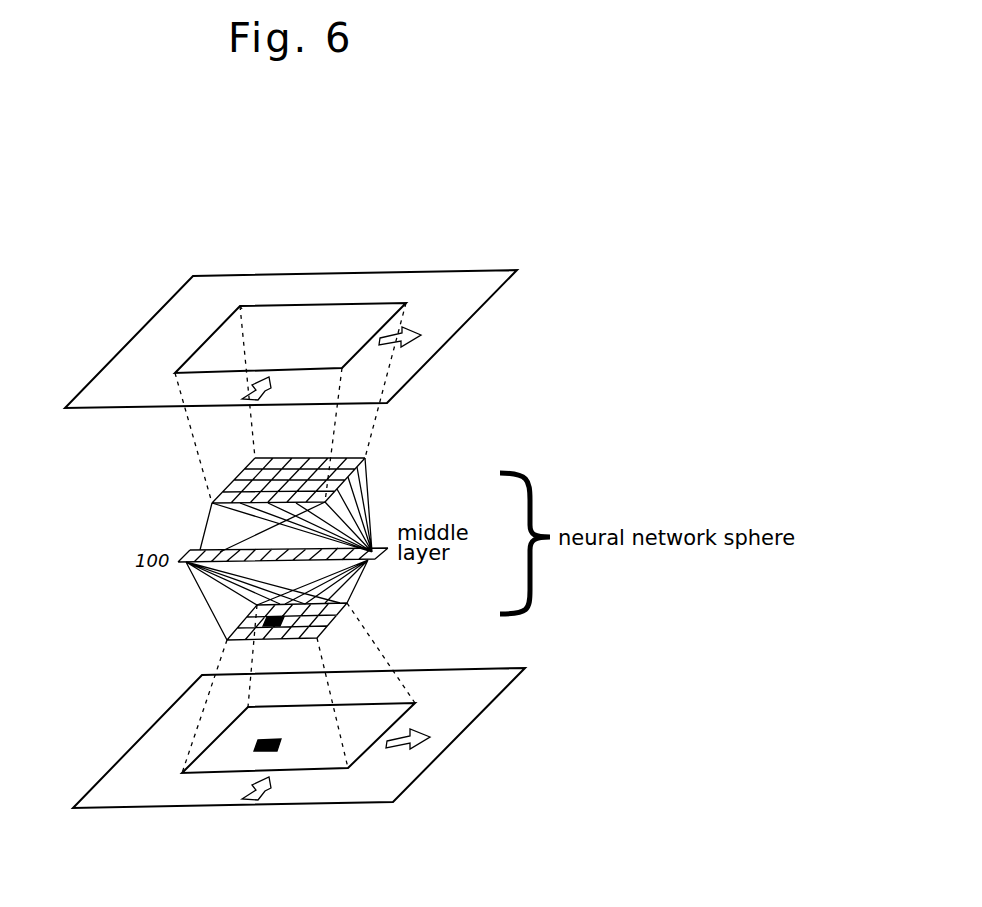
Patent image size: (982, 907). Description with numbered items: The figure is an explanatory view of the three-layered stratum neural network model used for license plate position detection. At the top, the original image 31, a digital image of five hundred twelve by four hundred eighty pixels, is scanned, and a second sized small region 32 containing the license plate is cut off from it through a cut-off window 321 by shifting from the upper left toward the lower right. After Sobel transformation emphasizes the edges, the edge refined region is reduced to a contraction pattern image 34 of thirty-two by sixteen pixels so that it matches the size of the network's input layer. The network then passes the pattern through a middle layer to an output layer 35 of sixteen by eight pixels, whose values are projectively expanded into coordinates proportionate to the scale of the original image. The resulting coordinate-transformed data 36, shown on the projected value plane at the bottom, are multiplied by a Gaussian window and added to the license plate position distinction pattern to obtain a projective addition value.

The original image 31 is at (500, 289).
The second sized small region 32 is at (282, 306).
The cut-off window 321 is at (238, 305).
The contraction pattern image 34 is at (223, 490).
The output layer 35 is at (217, 602).
The data 36 is at (210, 776).